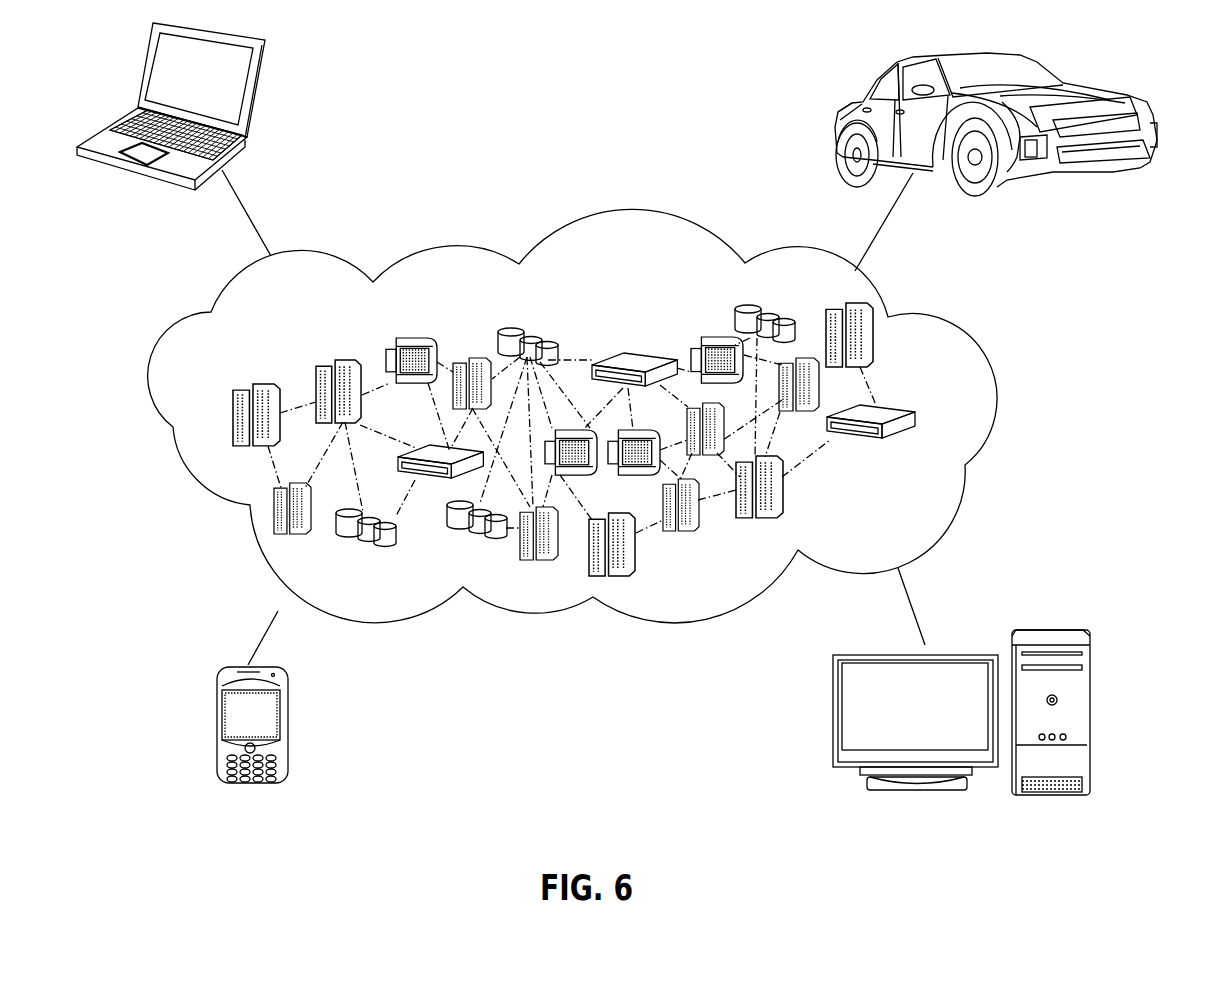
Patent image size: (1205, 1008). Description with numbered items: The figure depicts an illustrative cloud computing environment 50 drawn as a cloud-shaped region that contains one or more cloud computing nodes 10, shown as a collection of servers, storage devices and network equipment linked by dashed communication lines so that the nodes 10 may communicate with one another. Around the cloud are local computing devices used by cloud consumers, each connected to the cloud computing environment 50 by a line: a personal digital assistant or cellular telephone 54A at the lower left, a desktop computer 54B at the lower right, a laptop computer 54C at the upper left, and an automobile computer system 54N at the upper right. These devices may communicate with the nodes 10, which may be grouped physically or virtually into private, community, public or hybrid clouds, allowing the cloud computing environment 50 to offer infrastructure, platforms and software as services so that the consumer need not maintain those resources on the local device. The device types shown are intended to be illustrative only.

The cloud computing node 10 is at (948, 413).
The cloud computing environment 50 is at (973, 330).
The personal digital assistant or cellular telephone 54A is at (217, 730).
The desktop computer 54B is at (1053, 627).
The laptop computer 54C is at (260, 93).
The automobile computer system 54N is at (843, 100).